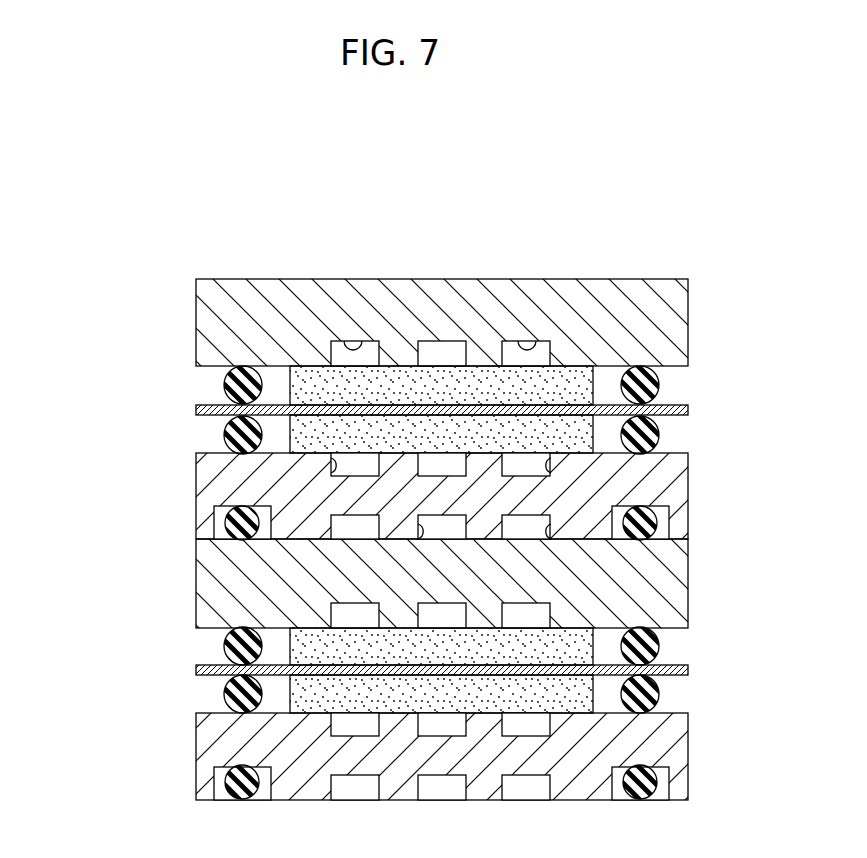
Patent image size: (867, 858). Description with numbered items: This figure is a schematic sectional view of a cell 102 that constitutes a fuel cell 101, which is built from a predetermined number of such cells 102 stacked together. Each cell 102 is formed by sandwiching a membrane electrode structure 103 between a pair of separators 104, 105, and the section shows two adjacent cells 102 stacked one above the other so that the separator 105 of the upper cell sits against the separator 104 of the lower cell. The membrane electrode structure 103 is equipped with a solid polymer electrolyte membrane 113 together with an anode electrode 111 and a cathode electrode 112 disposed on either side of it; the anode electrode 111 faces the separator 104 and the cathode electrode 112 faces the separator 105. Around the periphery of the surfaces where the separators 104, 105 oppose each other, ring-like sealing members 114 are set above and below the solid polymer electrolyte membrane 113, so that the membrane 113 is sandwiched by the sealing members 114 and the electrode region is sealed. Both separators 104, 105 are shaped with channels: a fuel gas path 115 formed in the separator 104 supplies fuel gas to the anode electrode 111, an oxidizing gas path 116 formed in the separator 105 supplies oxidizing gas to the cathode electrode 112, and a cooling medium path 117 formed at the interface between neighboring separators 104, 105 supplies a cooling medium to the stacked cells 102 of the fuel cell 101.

The fuel cell 101 is at (706, 208).
The cell 102 is at (113, 283).
The membrane electrode structure 103 is at (750, 358).
The separator 104 is at (220, 299).
The separator 105 is at (203, 492).
The anode electrode 111 is at (393, 383).
The cathode electrode 112 is at (558, 428).
The solid polymer electrolyte membrane 113 is at (196, 410).
The sealing member 114 is at (224, 388).
The fuel gas path 115 is at (358, 340).
The oxidizing gas path 116 is at (331, 466).
The cooling medium path 117 is at (426, 541).